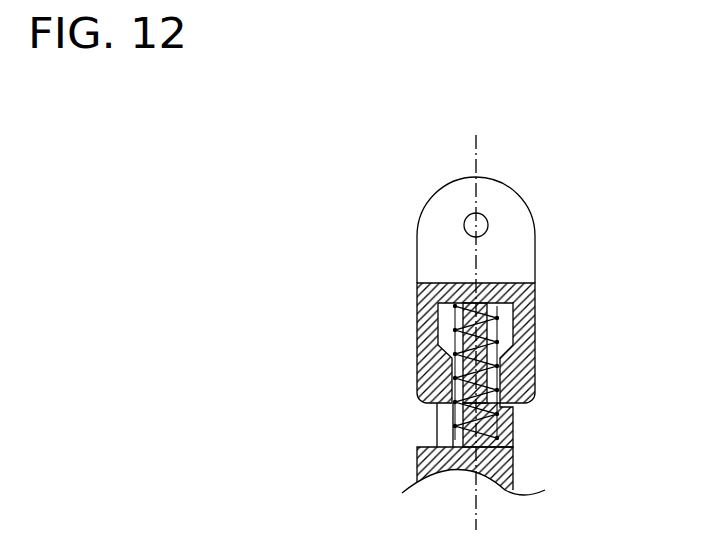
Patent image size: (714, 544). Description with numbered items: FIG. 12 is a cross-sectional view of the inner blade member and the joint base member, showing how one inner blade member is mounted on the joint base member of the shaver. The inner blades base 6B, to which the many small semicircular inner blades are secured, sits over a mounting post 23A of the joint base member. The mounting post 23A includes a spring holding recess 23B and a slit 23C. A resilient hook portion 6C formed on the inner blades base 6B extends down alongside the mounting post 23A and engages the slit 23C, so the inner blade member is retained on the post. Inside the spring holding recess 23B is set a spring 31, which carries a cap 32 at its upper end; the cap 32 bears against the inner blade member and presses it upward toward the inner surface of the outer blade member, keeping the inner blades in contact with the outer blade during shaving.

The inner blades base 6B is at (543, 302).
The resilient hook portion 6C is at (533, 382).
The spring 31 is at (447, 338).
The cap 32 is at (447, 318).
The mounting post 23A is at (517, 464).
The spring holding recess 23B is at (436, 425).
The slit 23C is at (513, 408).